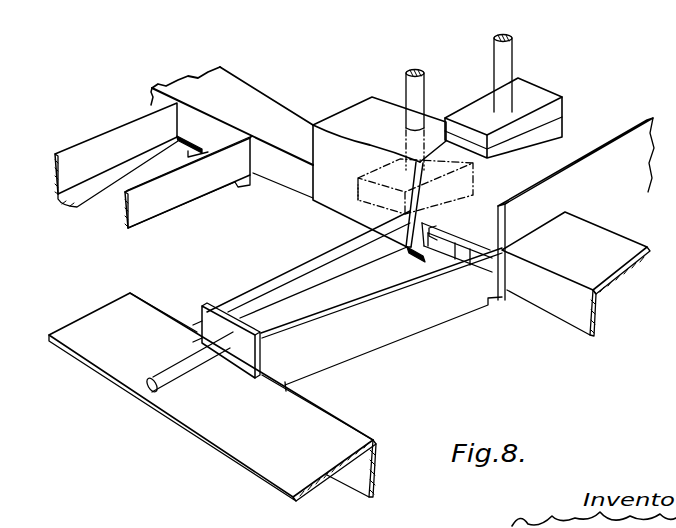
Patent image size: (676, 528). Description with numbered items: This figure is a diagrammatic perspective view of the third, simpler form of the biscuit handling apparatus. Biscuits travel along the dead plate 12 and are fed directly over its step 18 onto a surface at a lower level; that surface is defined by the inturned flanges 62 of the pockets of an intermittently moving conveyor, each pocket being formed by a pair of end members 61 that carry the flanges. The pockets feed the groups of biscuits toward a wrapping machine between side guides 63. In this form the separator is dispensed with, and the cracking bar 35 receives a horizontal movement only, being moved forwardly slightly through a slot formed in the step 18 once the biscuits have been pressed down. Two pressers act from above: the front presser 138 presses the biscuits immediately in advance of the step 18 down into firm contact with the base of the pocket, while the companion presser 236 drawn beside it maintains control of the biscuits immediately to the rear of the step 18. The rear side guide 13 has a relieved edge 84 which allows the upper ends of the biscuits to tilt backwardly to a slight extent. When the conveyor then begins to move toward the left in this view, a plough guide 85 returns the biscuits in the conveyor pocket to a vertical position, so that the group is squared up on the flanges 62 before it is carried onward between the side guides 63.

The dead plate 12 is at (567, 150).
The rear side guide 13 is at (625, 130).
The step 18 is at (437, 226).
The cracking bar 35 is at (453, 253).
The end members 61 is at (114, 128).
The inturned flanges 62 is at (85, 205).
The side guides 63 is at (278, 175).
The relieved edge 84 is at (412, 176).
The plough guide 85 is at (367, 152).
The front presser 138 is at (360, 189).
The clamp block 236 is at (530, 87).